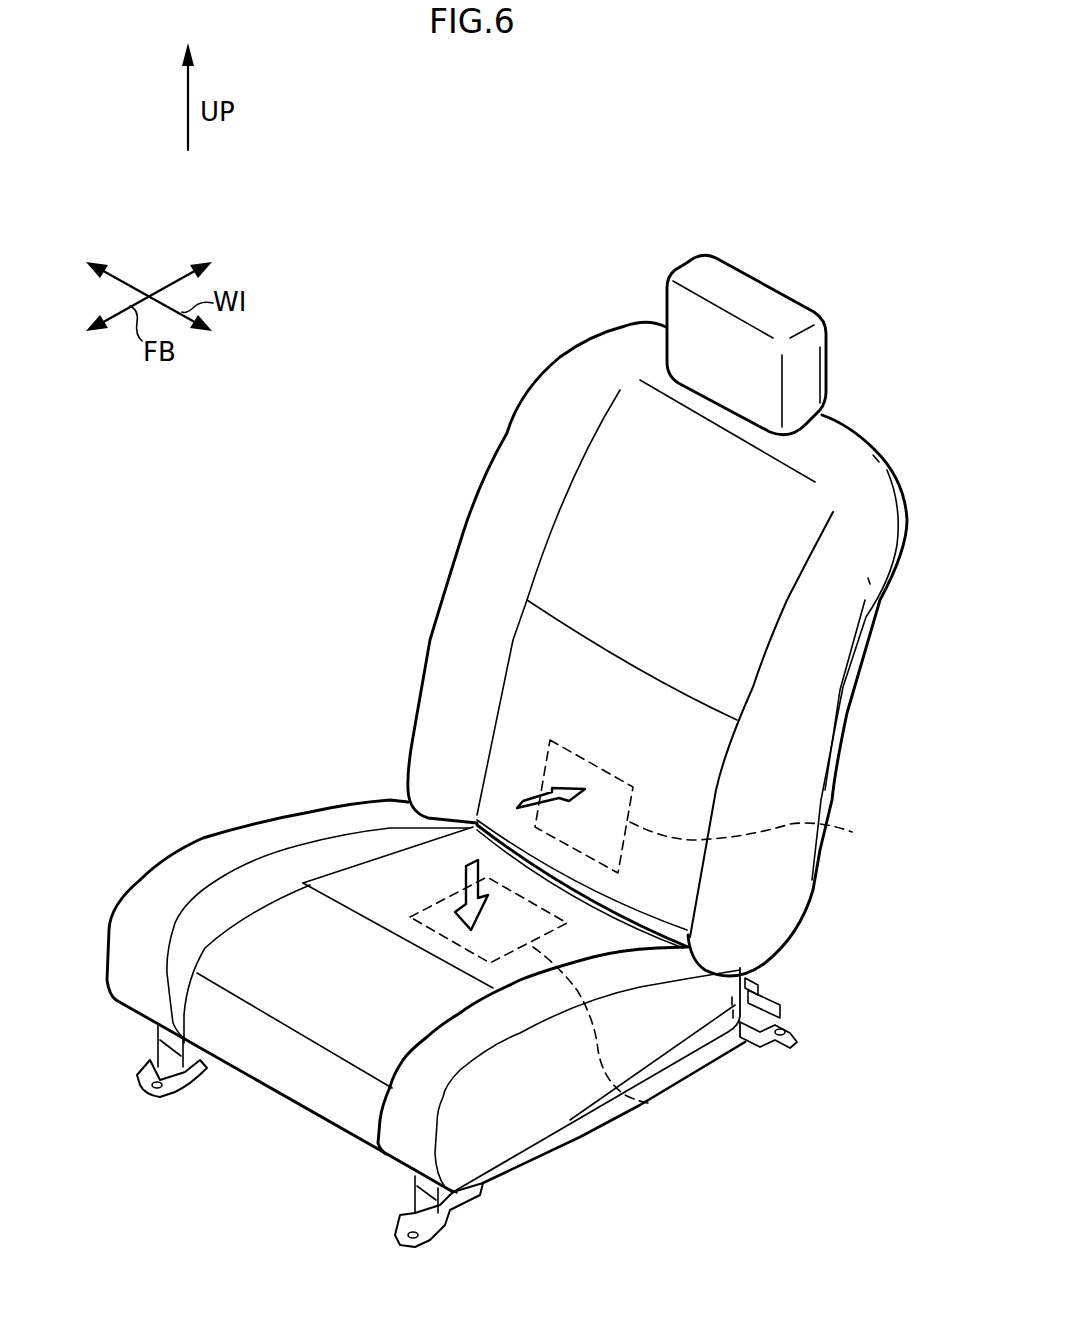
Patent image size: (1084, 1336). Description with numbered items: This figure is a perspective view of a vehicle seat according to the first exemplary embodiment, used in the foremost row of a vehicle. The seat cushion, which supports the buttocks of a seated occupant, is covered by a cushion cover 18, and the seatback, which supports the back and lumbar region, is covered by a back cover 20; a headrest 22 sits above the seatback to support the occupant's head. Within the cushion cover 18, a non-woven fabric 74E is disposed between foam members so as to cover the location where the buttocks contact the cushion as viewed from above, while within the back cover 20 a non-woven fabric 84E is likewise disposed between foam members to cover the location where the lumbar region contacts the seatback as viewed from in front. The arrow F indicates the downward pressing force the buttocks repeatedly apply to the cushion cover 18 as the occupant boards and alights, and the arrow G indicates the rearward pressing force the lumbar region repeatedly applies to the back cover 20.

The cushion cover 18 is at (263, 784).
The back cover 20 is at (466, 481).
The headrest 22 is at (769, 268).
The non-woven fabric 74E is at (640, 1100).
The non-woven fabric 84E is at (768, 835).
The arrow F is at (463, 878).
The arrow G is at (525, 798).